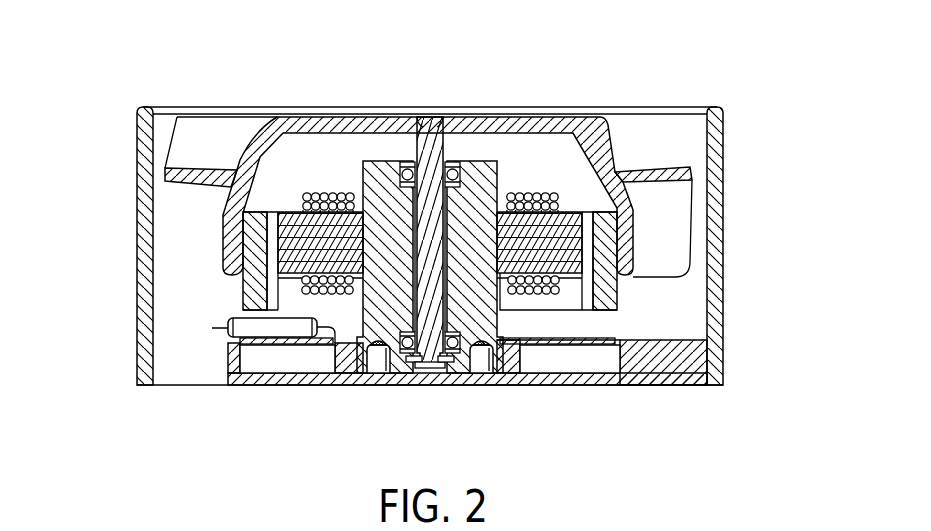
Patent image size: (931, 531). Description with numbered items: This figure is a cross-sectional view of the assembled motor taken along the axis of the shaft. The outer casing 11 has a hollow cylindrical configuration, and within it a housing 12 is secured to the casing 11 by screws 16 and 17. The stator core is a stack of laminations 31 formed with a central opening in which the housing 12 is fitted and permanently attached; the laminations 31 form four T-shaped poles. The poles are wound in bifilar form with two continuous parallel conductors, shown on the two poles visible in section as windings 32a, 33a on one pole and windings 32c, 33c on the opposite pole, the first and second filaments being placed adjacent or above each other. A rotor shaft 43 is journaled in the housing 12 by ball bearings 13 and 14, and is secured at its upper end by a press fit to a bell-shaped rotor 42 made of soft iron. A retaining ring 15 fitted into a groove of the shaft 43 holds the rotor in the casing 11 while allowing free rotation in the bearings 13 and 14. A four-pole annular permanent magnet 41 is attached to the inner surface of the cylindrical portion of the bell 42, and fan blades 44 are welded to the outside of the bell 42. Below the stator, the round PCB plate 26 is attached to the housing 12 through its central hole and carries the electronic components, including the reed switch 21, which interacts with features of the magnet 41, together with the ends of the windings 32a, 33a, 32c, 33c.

The casing 11 is at (722, 312).
The housing 12 is at (374, 161).
The ball bearing 13 is at (456, 162).
The ball bearing 14 is at (452, 370).
The retaining ring 15 is at (410, 365).
The screw 16 is at (377, 385).
The screw 17 is at (473, 373).
The reed switch 21 is at (225, 320).
The PCB plate 26 is at (573, 340).
The stacked laminations 31 is at (583, 242).
The winding 32a is at (315, 195).
The winding 33a is at (328, 248).
The winding 32c is at (543, 195).
The winding 33c is at (533, 248).
The permanent magnet 41 is at (615, 300).
The bell-shaped rotor 42 is at (612, 148).
The rotor shaft 43 is at (423, 117).
The fan blades 44 is at (172, 142).